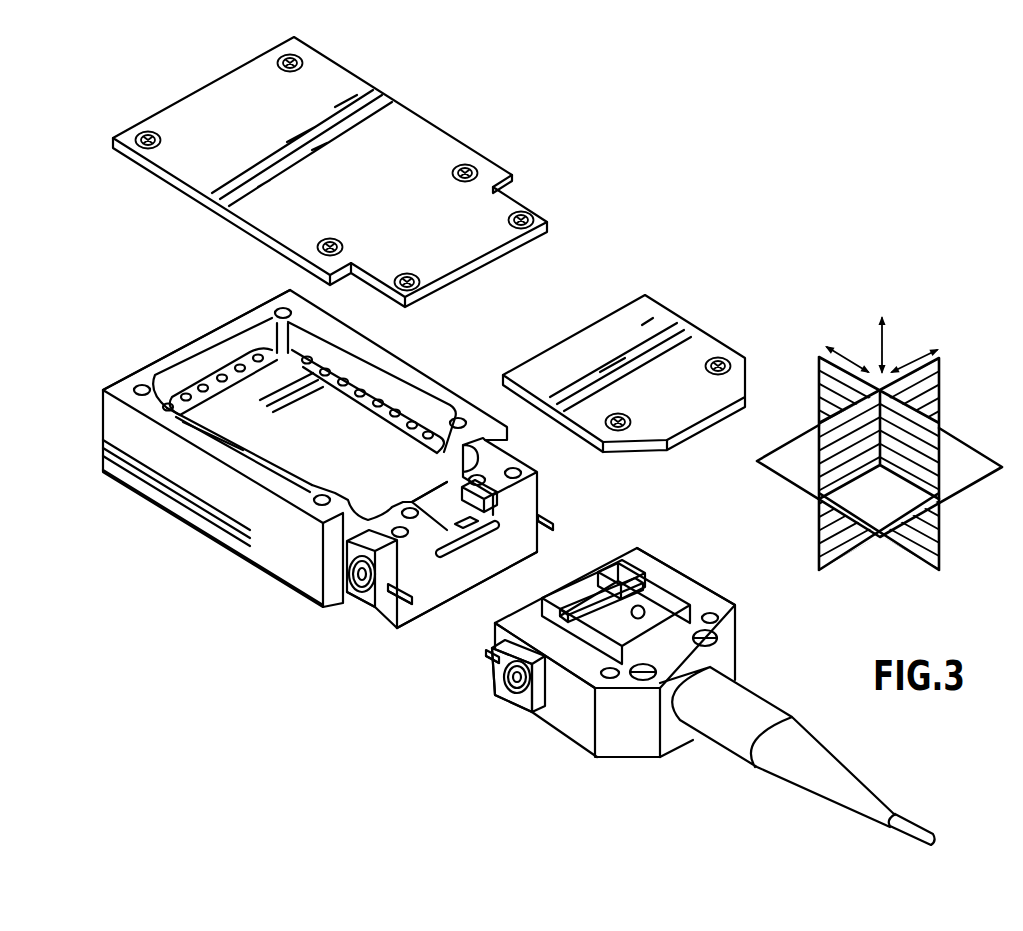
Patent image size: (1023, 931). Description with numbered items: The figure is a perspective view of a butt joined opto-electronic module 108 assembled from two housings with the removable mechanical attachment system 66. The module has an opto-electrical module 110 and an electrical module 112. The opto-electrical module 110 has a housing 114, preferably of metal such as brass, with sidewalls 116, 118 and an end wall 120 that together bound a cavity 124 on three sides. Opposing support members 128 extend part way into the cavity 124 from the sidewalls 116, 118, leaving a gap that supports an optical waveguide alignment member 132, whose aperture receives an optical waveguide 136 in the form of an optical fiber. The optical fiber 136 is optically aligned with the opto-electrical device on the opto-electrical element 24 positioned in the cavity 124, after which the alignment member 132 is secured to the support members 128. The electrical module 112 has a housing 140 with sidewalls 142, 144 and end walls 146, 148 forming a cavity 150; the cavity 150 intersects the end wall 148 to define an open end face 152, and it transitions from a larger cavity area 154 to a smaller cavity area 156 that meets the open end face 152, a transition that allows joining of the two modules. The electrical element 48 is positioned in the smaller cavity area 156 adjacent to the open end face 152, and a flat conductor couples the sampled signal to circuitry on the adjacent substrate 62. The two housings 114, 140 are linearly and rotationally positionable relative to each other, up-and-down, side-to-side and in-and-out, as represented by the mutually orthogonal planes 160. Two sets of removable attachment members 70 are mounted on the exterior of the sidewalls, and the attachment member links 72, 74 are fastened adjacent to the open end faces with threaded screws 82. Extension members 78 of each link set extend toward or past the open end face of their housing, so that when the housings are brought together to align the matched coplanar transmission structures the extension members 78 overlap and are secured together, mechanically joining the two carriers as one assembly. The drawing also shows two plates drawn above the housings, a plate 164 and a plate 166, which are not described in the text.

The opto-electrical element 24 is at (563, 607).
The electrical element 48 is at (485, 535).
The adjacent substrate 62 is at (302, 452).
The removable mechanical attachment system 66 is at (363, 616).
The removable attachment members 70 is at (407, 653).
The attachment member link 72 is at (353, 600).
The attachment member link 74 is at (537, 687).
The extension members 78 is at (404, 610).
The threaded screws 82 is at (350, 575).
The butt joined opto-electronic module 108 is at (638, 495).
The opto-electrical module 110 is at (713, 685).
The electrical module 112 is at (327, 531).
The housing 114 is at (557, 737).
The sidewall 116 is at (720, 590).
The sidewall 118 is at (577, 733).
The end wall 120 is at (712, 650).
The cavity 124 is at (672, 608).
The support members 128 is at (598, 590).
The optical waveguide alignment member 132 is at (643, 597).
The optical waveguide 136 is at (610, 663).
The housing 140 is at (177, 523).
The sidewall 142 is at (135, 478).
The sidewall 144 is at (450, 390).
The end wall 146 is at (193, 342).
The end wall 148 is at (470, 597).
The cavity 150 is at (303, 420).
The open end face 152 is at (470, 567).
The larger cavity area 154 is at (350, 357).
The smaller cavity area 156 is at (442, 510).
The mutually orthogonal planes 160 is at (943, 388).
The inner cover plate 164 is at (697, 342).
The outer cover plate 166 is at (447, 145).